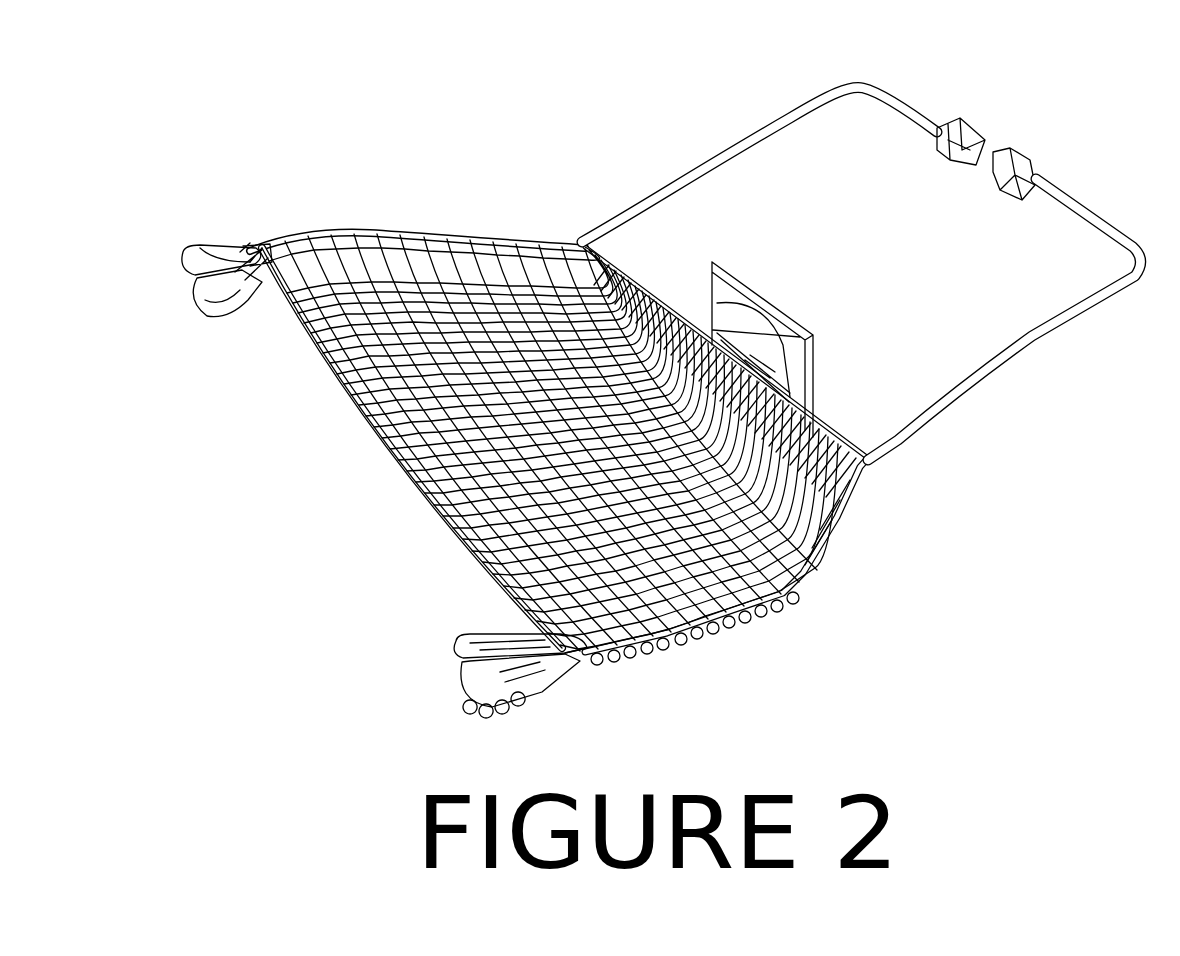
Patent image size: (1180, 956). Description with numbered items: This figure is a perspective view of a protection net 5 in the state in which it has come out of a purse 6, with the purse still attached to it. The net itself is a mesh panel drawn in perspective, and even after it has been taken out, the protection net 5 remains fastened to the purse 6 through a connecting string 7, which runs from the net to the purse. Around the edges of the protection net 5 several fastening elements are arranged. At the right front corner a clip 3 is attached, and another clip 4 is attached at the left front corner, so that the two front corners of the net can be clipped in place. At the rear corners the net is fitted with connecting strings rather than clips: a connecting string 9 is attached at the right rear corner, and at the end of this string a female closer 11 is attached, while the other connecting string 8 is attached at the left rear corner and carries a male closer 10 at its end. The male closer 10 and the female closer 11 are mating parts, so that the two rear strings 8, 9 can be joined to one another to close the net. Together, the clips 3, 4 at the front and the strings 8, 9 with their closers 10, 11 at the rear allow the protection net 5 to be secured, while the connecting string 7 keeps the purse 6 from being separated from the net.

The clip 3 is at (455, 645).
The clip 4 is at (188, 240).
The protection net 5 is at (453, 238).
The purse 6 is at (713, 260).
The connecting string 7 is at (707, 340).
The connecting string 8 is at (783, 108).
The connecting string 9 is at (1033, 340).
The male closer 10 is at (963, 120).
The female buckle 11 is at (1067, 158).